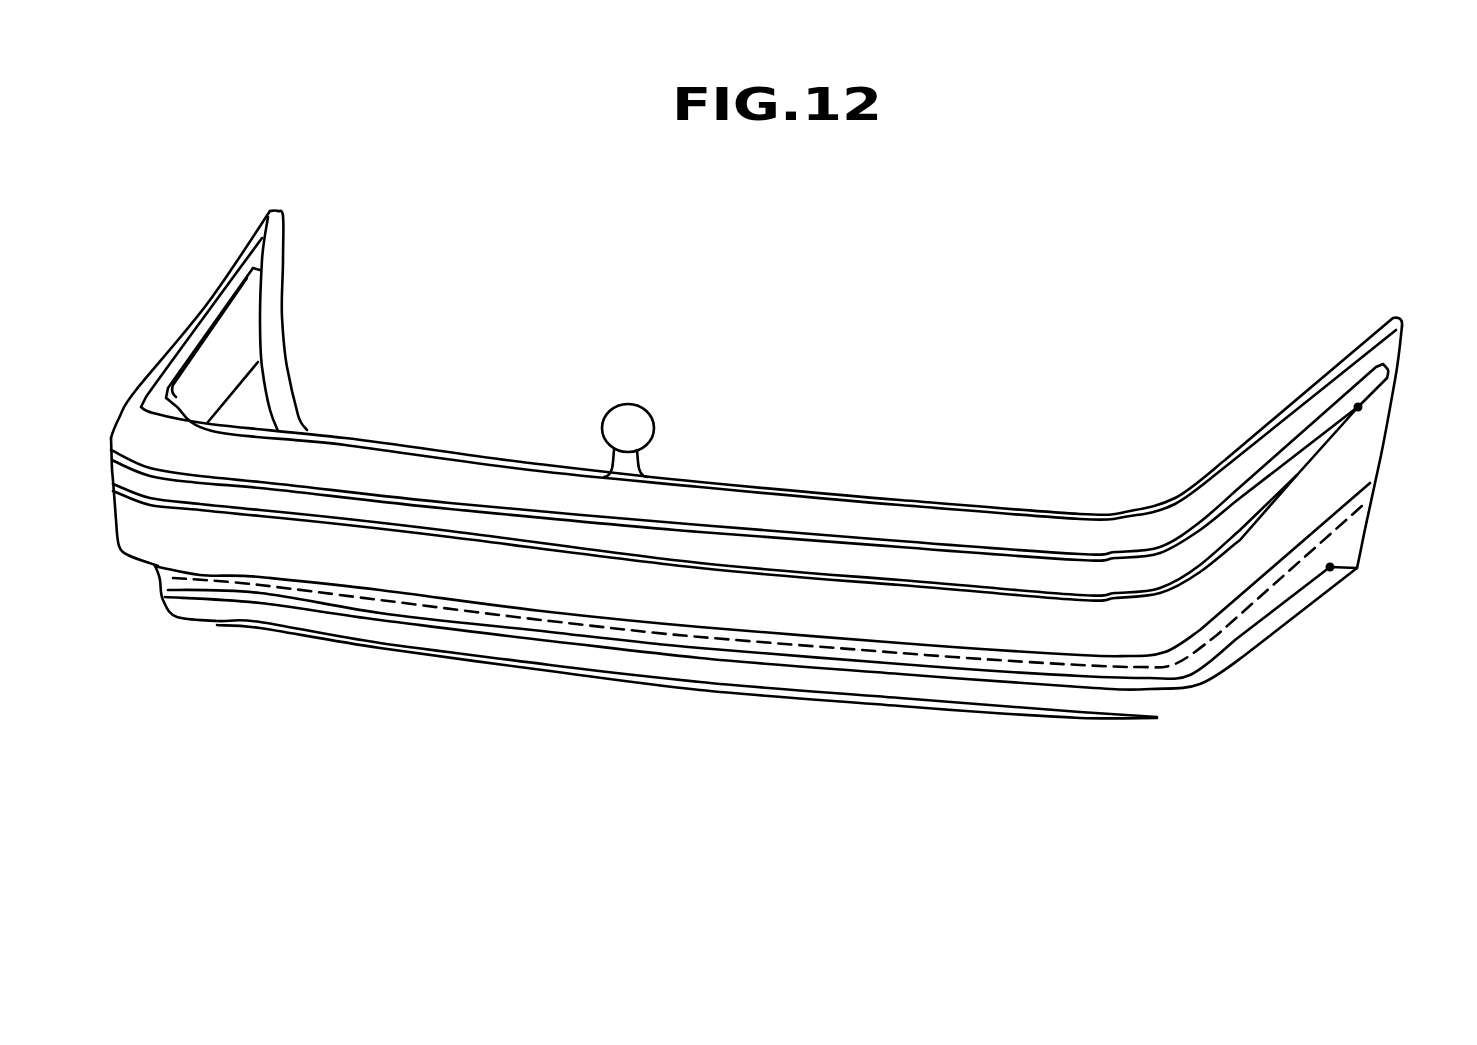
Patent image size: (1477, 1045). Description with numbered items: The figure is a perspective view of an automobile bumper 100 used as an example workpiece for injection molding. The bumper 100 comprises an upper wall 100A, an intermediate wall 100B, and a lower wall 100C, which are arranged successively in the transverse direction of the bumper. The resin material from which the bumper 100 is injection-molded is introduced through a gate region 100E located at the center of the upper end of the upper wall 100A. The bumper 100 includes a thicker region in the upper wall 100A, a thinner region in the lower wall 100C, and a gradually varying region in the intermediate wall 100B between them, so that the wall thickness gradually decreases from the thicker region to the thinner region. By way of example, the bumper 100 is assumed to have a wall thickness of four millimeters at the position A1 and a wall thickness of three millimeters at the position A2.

The automobile bumper 100 is at (1033, 330).
The upper wall 100A is at (873, 512).
The intermediate wall 100B is at (150, 533).
The lower wall 100C is at (545, 636).
The gate region 100E is at (632, 424).
The position A1 is at (1358, 407).
The position A2 is at (1357, 568).